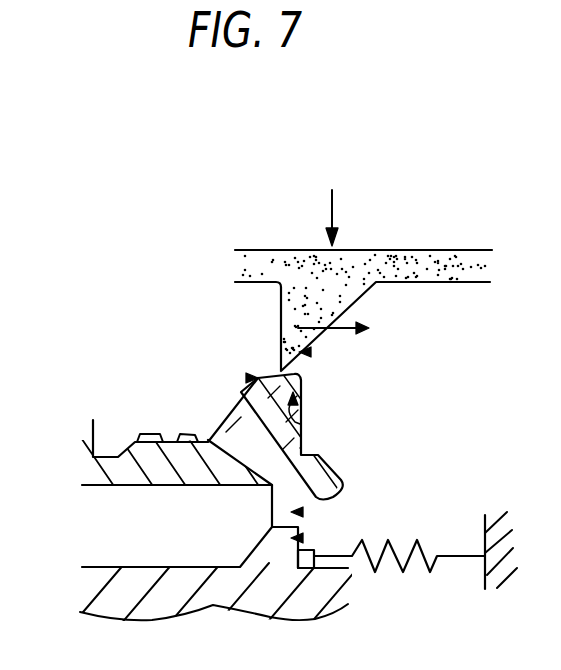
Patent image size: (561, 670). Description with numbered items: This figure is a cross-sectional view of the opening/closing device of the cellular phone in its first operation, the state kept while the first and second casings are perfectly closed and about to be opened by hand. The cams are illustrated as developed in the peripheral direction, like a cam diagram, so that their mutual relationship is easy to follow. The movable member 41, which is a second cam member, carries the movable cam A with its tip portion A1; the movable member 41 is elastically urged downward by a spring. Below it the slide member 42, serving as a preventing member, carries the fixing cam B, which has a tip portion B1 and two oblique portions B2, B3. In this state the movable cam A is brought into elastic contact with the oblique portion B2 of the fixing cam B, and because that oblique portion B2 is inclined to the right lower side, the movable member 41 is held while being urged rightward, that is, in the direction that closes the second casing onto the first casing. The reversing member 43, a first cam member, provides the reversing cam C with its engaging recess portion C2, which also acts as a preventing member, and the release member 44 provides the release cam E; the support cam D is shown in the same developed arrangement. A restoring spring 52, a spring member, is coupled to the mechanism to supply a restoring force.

The movable member 41 is at (260, 258).
The slide member 42 is at (348, 455).
The reversing member 43 is at (263, 432).
The release member 44 is at (142, 577).
The restoring spring 52 is at (424, 564).
The movable cam A is at (452, 333).
The tip portion A1 is at (272, 378).
The fixing cam B is at (152, 328).
The tip portion B1 is at (279, 368).
The oblique portion B2 is at (301, 372).
The oblique portion B3 is at (248, 378).
The reversing cam C is at (302, 427).
The engaging recess portion C2 is at (167, 440).
The support cam D is at (455, 463).
The release cam E is at (303, 538).